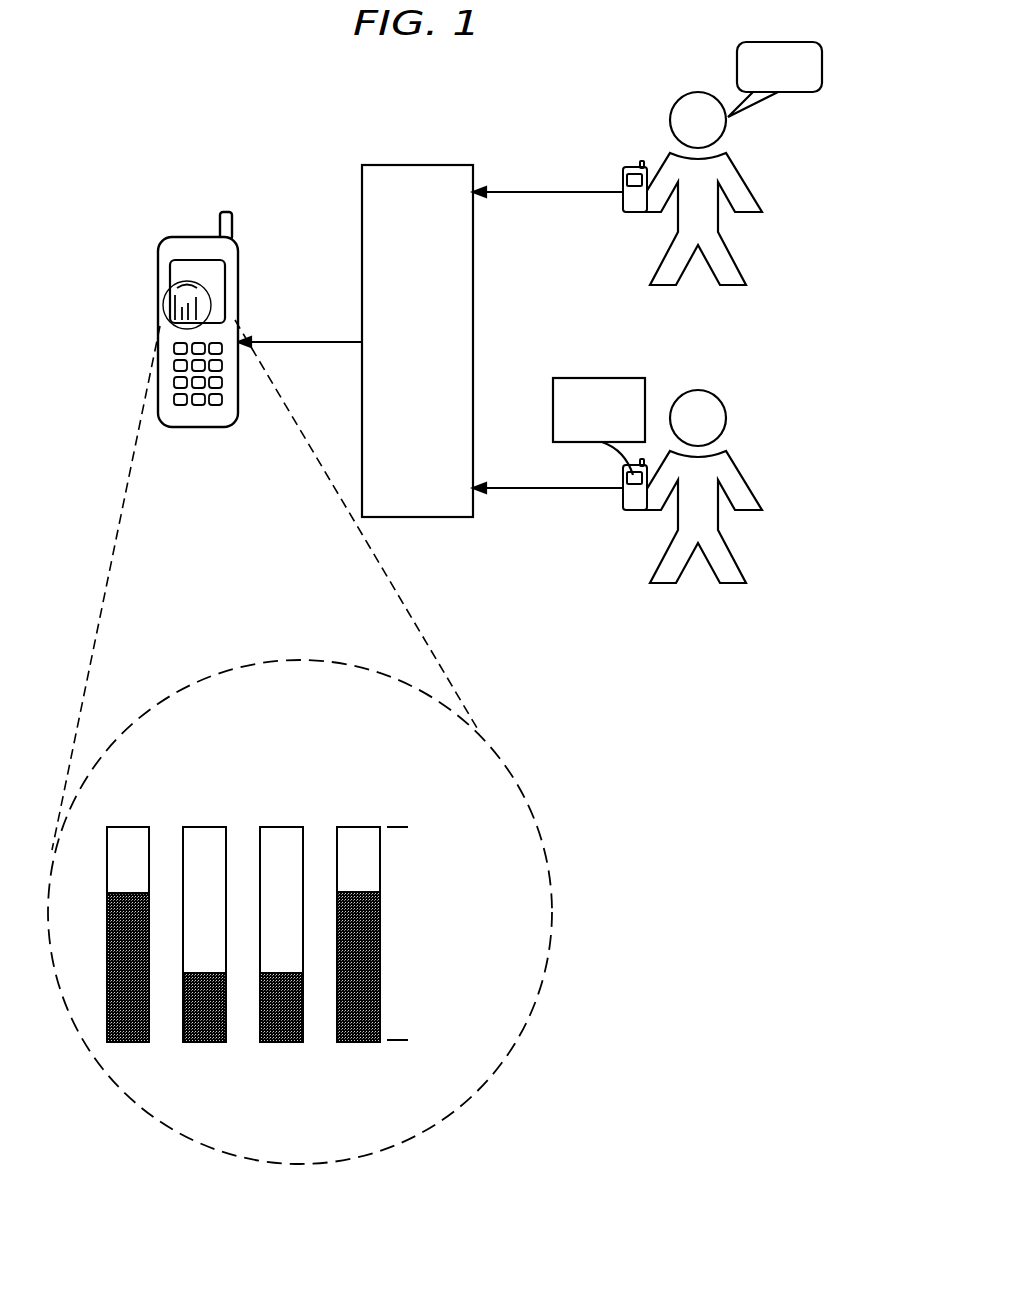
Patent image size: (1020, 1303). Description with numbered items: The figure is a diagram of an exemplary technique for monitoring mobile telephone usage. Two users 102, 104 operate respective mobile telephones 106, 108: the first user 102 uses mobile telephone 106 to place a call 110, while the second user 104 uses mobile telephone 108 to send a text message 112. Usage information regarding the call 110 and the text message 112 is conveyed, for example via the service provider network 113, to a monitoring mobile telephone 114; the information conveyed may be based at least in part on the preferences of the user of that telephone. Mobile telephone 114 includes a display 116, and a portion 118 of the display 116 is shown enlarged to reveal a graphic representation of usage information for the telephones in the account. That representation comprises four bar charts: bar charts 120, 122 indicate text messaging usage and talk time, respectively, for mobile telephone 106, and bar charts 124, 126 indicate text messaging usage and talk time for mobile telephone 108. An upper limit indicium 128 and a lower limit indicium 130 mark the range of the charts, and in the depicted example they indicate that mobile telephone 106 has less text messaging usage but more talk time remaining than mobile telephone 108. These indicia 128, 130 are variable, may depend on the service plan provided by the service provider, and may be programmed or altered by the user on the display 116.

The user 102 is at (743, 180).
The user 104 is at (742, 473).
The mobile telephone 106 is at (622, 206).
The mobile telephone 108 is at (622, 504).
The call 110 is at (783, 42).
The text message 112 is at (602, 378).
The service provider network 113 is at (410, 165).
The mobile telephone 114 is at (237, 268).
The display 116 is at (180, 272).
The portion of display 118 is at (553, 921).
The bar chart 120 is at (144, 800).
The bar chart 122 is at (221, 800).
The bar chart 124 is at (298, 800).
The bar chart 126 is at (375, 800).
The upper limit indicium 128 is at (448, 857).
The lower limit indicium 130 is at (449, 1010).